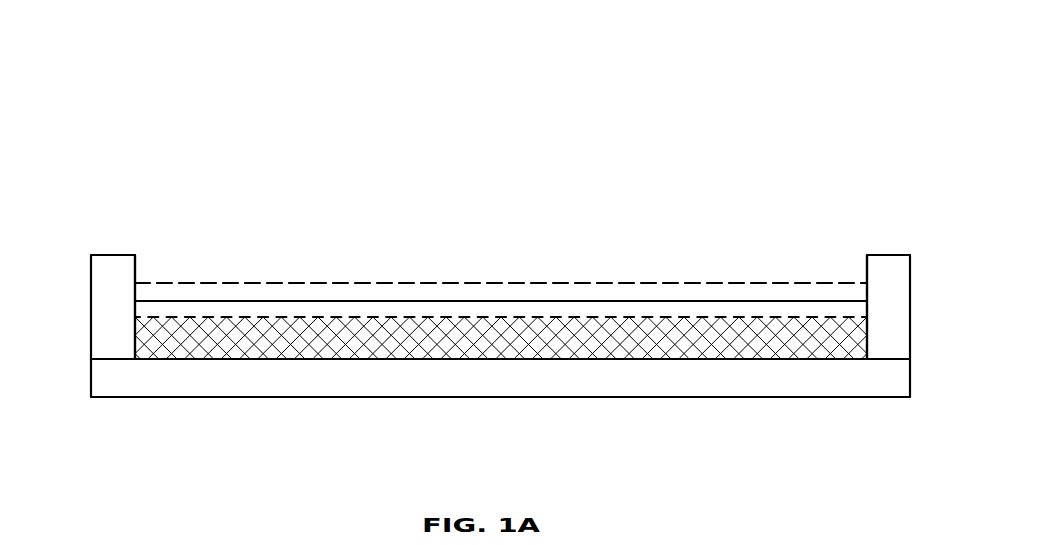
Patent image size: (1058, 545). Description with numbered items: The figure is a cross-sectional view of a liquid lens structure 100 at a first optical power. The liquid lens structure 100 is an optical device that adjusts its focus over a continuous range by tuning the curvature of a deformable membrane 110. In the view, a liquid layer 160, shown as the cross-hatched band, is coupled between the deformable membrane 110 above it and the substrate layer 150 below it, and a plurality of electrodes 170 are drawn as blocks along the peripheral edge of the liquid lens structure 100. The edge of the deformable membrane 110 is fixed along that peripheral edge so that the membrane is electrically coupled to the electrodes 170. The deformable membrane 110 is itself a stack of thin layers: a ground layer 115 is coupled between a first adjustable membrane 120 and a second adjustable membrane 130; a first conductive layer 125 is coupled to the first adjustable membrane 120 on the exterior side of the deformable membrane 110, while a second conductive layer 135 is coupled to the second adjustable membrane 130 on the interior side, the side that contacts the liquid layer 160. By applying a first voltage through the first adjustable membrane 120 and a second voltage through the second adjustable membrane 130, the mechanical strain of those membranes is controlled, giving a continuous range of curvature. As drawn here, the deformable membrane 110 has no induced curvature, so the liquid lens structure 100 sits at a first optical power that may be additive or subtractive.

The liquid lens structure 100 is at (108, 82).
The deformable membrane 110 is at (123, 278).
The ground layer 115 is at (470, 302).
The first adjustable membrane 120 is at (150, 293).
The first conductive layer 125 is at (265, 285).
The second adjustable membrane 130 is at (829, 308).
The second conductive layer 135 is at (717, 317).
The substrate layer 150 is at (583, 397).
The liquid layer 160 is at (387, 338).
The electrodes 170 is at (891, 308).